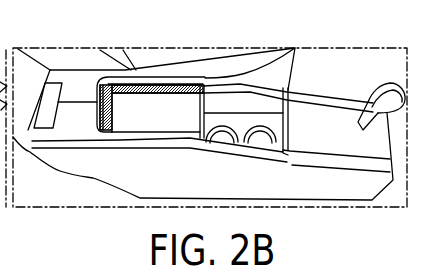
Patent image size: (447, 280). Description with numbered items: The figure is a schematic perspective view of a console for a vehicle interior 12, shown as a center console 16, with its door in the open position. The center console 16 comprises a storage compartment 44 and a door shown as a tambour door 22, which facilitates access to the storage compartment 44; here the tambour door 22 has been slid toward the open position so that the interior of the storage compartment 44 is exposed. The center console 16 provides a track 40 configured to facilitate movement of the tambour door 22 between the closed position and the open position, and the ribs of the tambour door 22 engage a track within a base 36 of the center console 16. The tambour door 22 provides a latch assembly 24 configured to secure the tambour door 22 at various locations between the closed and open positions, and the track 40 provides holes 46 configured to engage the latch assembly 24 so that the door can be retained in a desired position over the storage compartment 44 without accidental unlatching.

The vehicle interior 12 is at (328, 70).
The center console 16 is at (313, 91).
The tambour door 22 is at (114, 115).
The latch assembly 24 is at (100, 112).
The base 36 is at (317, 187).
The track 40 is at (148, 85).
The storage compartment 44 is at (165, 114).
The holes 46 is at (150, 85).